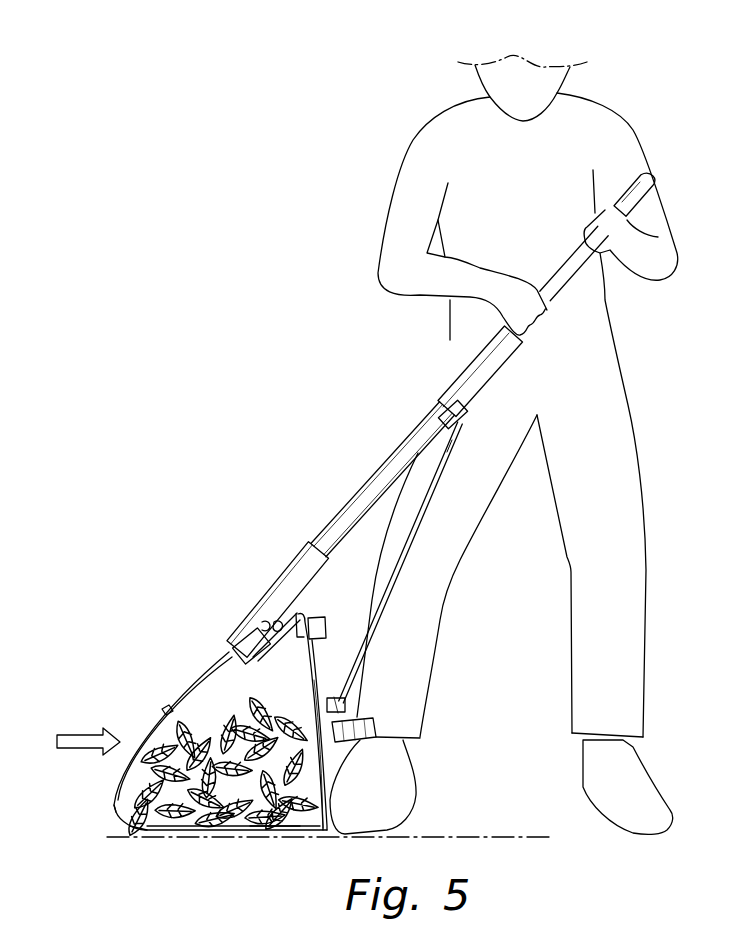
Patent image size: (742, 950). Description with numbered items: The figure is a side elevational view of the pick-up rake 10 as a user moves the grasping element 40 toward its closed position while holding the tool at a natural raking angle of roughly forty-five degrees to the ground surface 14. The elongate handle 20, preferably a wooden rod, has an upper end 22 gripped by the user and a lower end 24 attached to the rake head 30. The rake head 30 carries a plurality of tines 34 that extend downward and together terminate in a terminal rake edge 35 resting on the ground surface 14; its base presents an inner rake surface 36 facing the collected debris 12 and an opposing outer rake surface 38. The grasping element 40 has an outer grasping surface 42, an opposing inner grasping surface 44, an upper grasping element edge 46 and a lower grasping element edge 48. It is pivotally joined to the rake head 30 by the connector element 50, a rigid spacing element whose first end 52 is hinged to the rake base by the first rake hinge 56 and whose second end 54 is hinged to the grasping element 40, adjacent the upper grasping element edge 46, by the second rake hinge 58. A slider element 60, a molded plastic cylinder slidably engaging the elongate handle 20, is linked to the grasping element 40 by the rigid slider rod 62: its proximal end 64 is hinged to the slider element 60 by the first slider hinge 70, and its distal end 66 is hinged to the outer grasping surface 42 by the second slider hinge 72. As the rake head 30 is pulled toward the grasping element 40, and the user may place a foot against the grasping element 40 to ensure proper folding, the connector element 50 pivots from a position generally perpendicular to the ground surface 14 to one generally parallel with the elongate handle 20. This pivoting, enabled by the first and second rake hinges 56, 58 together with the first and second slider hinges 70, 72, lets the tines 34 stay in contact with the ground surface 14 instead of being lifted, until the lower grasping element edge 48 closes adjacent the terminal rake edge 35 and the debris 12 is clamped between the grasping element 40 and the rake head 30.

The pick-up rake 10 is at (200, 372).
The debris 12 is at (213, 827).
The ground surface 14 is at (495, 833).
The elongate handle 20 is at (420, 422).
The upper end 22 is at (650, 187).
The lower end 24 is at (345, 513).
The rake head 30 is at (197, 683).
The plurality of tines 34 is at (112, 800).
The terminal rake edge 35 is at (140, 837).
The inner rake surface 36 is at (178, 724).
The outer rake surface 38 is at (143, 731).
The grasping element 40 is at (335, 795).
The outer grasping surface 42 is at (333, 762).
The inner grasping surface 44 is at (320, 753).
The upper grasping element edge 46 is at (322, 653).
The lower grasping element edge 48 is at (277, 830).
The connector element 50 is at (267, 620).
The first end 52 is at (265, 660).
The second end 54 is at (286, 638).
The first rake hinge 56 is at (240, 626).
The second rake hinge 58 is at (278, 622).
The slider element 60 is at (508, 366).
The slider rod 62 is at (442, 480).
The proximal end 64 is at (453, 453).
The distal end 66 is at (356, 688).
The first slider hinge 70 is at (466, 417).
The second slider hinge 72 is at (346, 705).